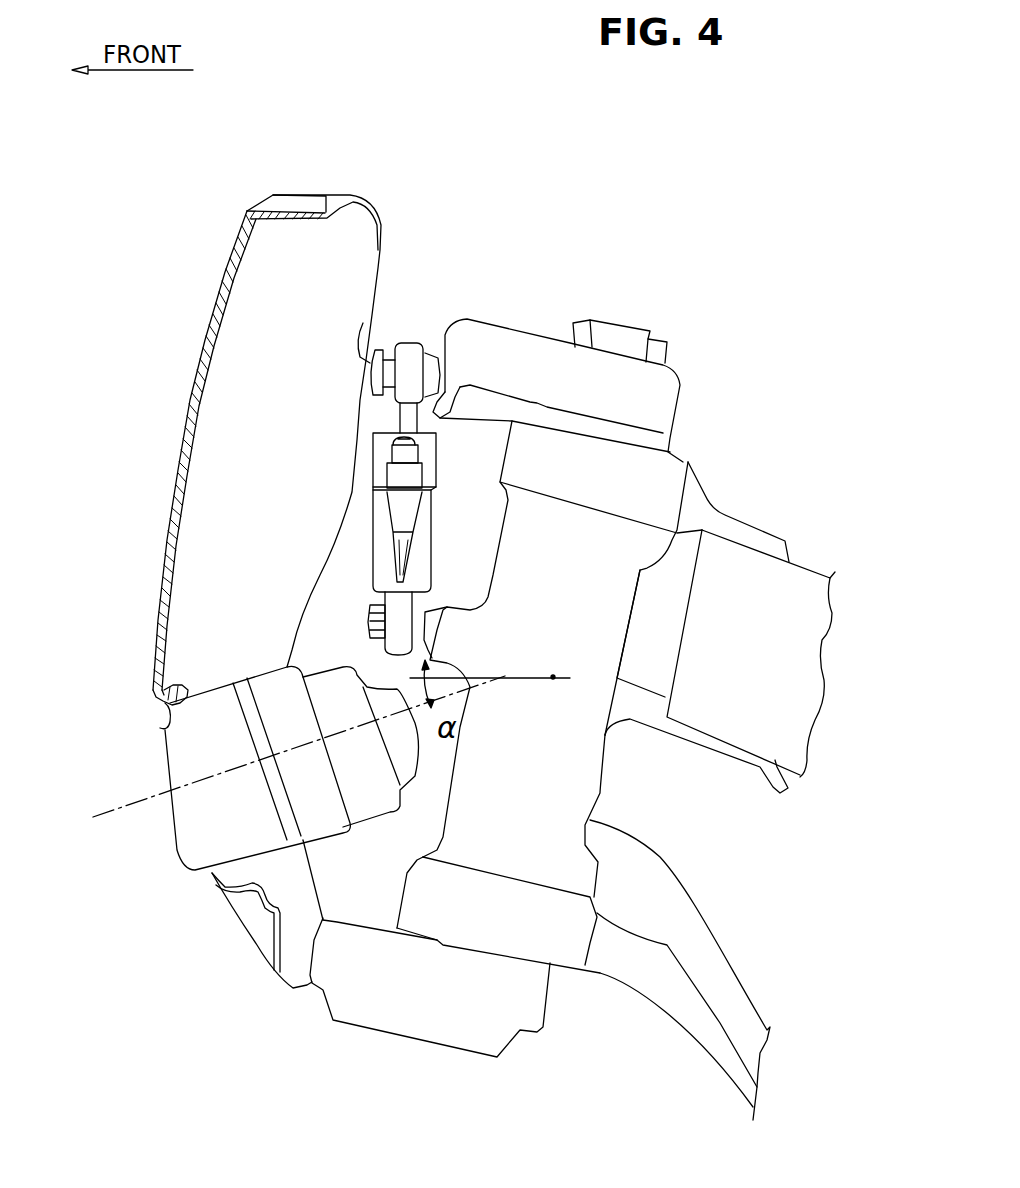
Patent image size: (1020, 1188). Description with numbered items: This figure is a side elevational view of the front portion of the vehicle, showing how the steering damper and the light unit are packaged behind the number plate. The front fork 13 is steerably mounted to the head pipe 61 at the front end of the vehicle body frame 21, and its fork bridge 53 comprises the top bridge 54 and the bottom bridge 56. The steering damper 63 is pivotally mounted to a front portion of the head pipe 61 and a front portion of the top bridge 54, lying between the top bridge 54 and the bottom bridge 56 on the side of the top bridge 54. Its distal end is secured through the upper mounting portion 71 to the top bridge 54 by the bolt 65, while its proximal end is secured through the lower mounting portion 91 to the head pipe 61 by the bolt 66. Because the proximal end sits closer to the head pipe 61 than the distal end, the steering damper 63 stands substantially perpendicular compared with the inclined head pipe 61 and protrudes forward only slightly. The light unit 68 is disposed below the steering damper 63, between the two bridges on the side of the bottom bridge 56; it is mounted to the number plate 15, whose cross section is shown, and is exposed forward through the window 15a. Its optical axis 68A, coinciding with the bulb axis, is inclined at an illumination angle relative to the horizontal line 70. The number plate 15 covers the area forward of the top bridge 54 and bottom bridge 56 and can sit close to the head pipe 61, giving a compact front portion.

The front fork 13 is at (682, 381).
The number plate 15 is at (190, 400).
The window 15a is at (160, 728).
The vehicle body frame 21 is at (793, 590).
The fork bridge 53 is at (672, 427).
The top bridge 54 is at (525, 347).
The bottom bridge 56 is at (435, 1022).
The head pipe 61 is at (612, 533).
The steering damper 63 is at (373, 463).
The bolt 65 is at (368, 325).
The bolt 66 is at (370, 607).
The light unit 68 is at (188, 847).
The optical axis 68A is at (117, 808).
The horizontal line 70 is at (553, 677).
The upper mounting portion 71 is at (413, 352).
The lower mounting portion 91 is at (430, 600).